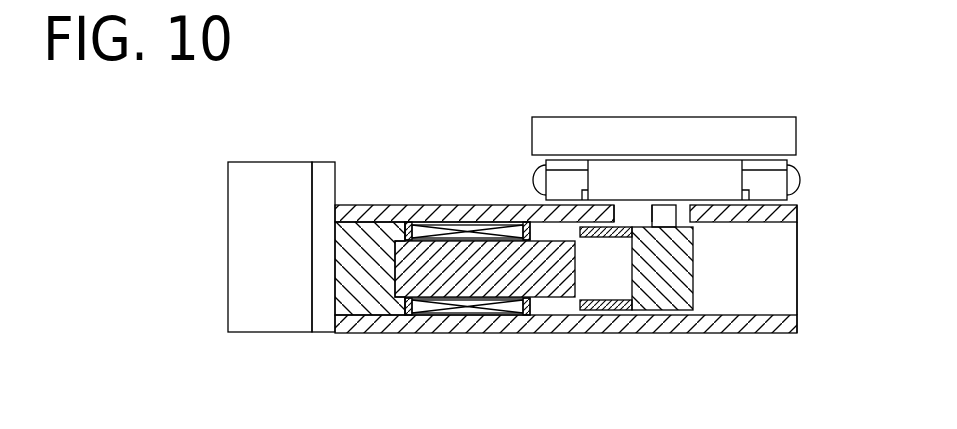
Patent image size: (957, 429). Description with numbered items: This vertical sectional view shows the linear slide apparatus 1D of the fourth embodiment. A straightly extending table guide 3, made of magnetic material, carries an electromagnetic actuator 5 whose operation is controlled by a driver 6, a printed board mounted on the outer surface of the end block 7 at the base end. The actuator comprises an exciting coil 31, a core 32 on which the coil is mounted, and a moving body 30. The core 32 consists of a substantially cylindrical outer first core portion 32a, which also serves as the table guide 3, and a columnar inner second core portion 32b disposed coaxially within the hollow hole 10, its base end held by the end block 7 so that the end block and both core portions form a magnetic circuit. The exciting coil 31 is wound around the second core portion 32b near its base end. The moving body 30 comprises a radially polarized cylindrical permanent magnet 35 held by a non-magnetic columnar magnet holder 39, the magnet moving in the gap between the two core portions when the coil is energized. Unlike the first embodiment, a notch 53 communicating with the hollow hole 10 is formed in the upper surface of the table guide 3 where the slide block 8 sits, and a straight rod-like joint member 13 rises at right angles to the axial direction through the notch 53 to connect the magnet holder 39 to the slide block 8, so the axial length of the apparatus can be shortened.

The linear slide apparatus 1D is at (553, 224).
The table guide 3 is at (539, 350).
The electromagnetic actuator 5 is at (418, 340).
The driver 6 is at (268, 187).
The end block 7 is at (322, 173).
The slide block 8 is at (720, 172).
The hollow hole 10 is at (766, 314).
The joint member 13 is at (663, 215).
The moving body 30 is at (580, 387).
The exciting coil 31 is at (460, 312).
The core 32 is at (495, 128).
The first core portion 32a is at (387, 213).
The second core portion 32b is at (467, 255).
The permanent magnet 35 is at (602, 310).
The magnet holder 39 is at (665, 290).
The notch 53 is at (630, 212).